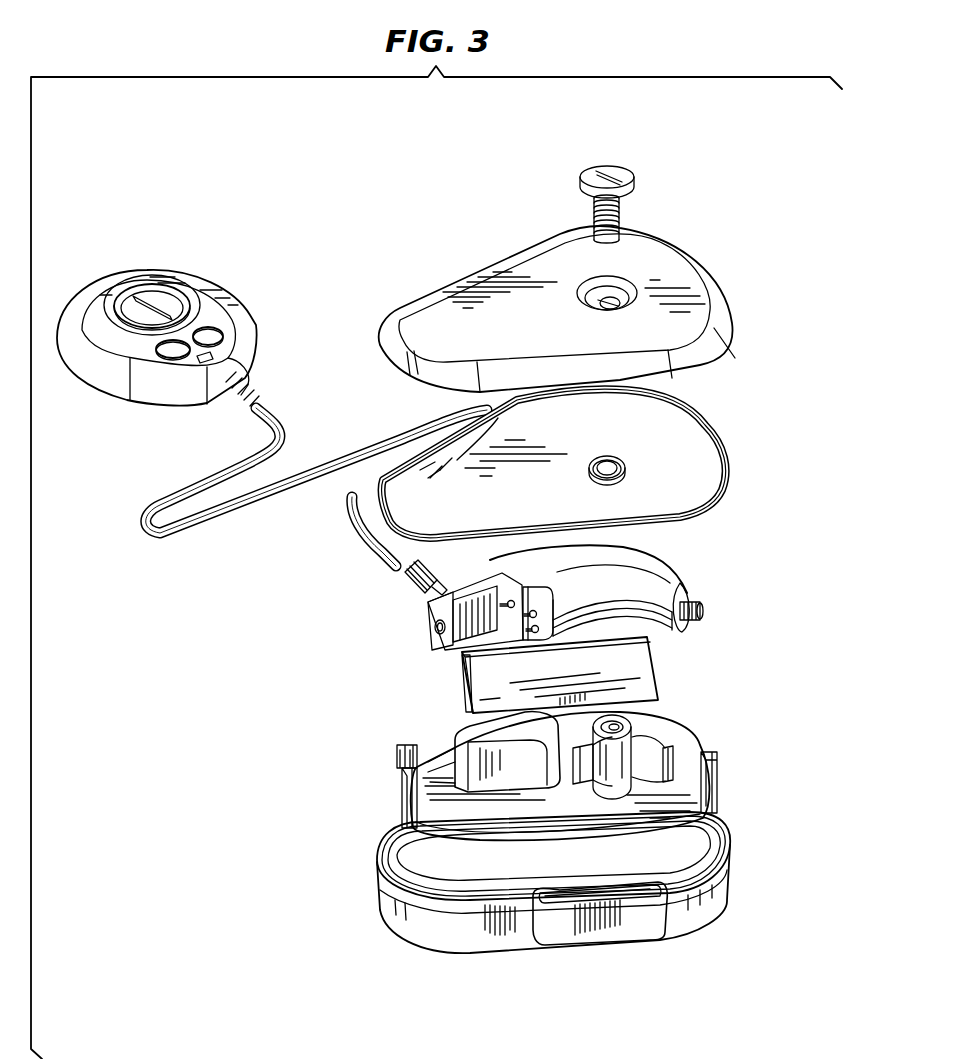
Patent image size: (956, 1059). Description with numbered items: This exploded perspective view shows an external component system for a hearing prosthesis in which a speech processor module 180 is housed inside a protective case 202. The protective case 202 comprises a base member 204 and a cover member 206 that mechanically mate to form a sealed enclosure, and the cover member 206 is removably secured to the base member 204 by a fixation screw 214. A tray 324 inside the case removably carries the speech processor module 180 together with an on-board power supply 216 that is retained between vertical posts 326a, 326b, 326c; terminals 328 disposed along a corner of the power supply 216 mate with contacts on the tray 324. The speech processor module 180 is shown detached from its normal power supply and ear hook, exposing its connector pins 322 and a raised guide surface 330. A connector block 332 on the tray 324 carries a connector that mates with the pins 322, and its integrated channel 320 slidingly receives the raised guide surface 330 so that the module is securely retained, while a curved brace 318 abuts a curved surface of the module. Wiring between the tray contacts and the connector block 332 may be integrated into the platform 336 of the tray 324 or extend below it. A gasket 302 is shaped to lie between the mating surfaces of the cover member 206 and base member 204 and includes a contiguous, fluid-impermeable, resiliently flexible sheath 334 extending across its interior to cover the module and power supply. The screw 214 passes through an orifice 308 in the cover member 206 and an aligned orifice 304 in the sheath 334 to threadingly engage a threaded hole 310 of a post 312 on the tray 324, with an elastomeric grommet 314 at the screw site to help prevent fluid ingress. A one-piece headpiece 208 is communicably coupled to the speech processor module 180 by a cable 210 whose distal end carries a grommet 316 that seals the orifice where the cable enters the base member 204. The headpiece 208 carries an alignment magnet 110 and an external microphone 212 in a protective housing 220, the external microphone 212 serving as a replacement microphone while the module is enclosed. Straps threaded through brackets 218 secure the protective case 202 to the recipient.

The alignment magnet 110 is at (118, 298).
The speech processor module 180 is at (700, 602).
The protective case 202 is at (731, 931).
The base member 204 is at (441, 955).
The cover member 206 is at (490, 244).
The headpiece 208 is at (168, 246).
The cable 210 is at (227, 517).
The external microphone 212 is at (187, 368).
The fixation screw 214 is at (606, 165).
The on-board power supply 216 is at (656, 666).
The brackets 218 is at (562, 940).
The protective housing 220 is at (222, 284).
The gasket 302 is at (718, 508).
The orifice 304 is at (615, 457).
The orifice 308 is at (612, 298).
The threaded hole 310 is at (626, 724).
The post 312 is at (668, 747).
The elastomeric grommet 314 is at (622, 476).
The grommet 316 is at (411, 597).
The brace 318 is at (590, 772).
The channel 320 is at (447, 752).
The connector pins 322 is at (512, 599).
The tray 324 is at (740, 739).
The vertical post 326a is at (397, 750).
The vertical post 326b is at (405, 788).
The vertical post 326c is at (717, 780).
The terminals 328 is at (462, 688).
The raised guide surface 330 is at (430, 640).
The connector block 332 is at (522, 775).
The sheath 334 is at (551, 499).
The platform 336 is at (695, 818).